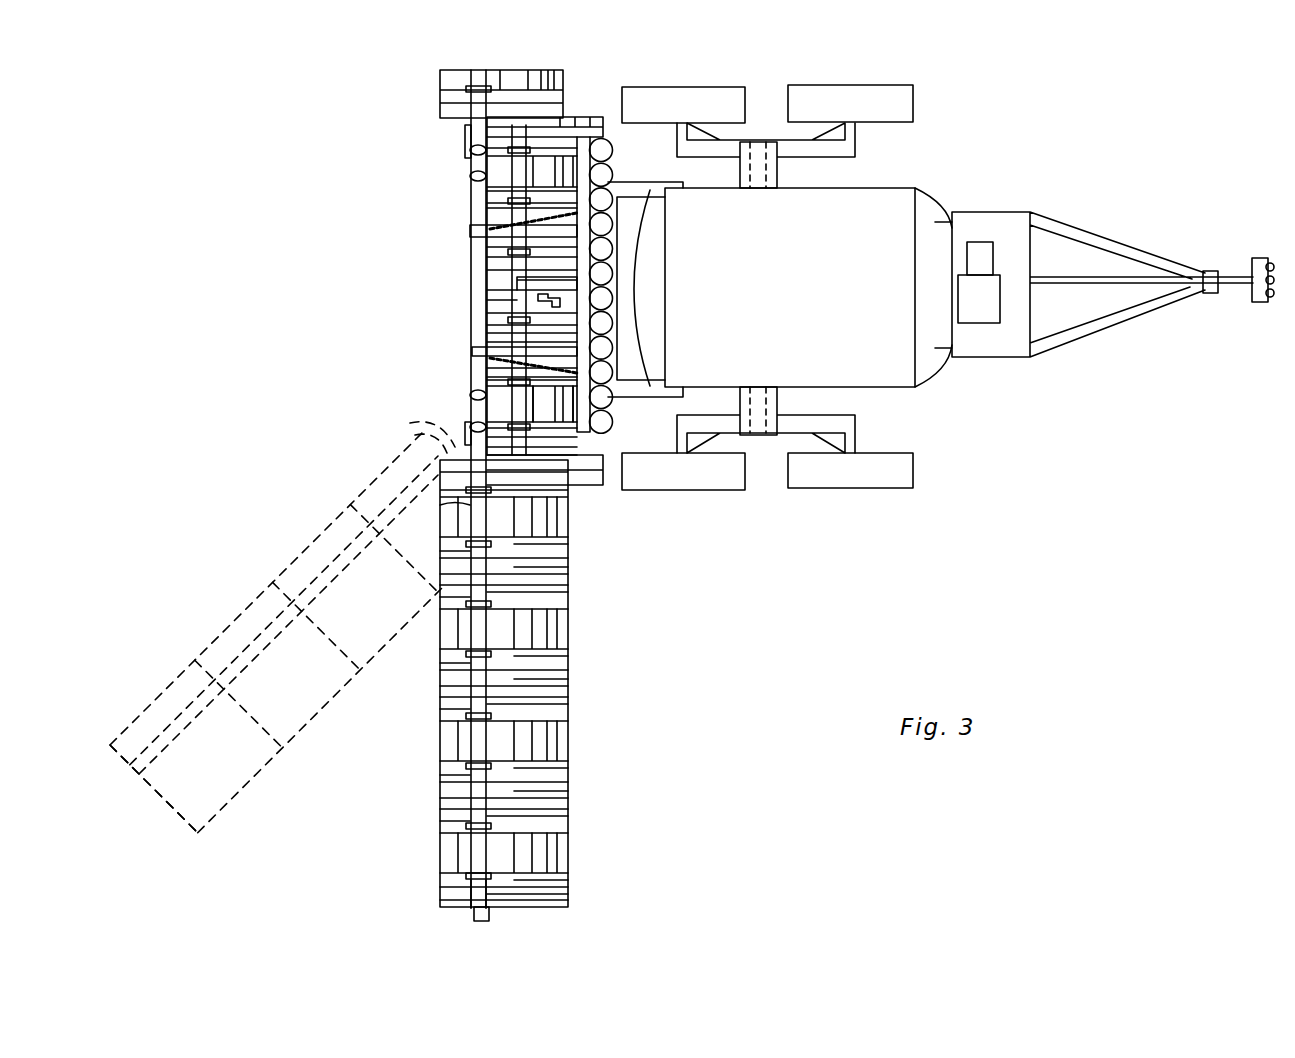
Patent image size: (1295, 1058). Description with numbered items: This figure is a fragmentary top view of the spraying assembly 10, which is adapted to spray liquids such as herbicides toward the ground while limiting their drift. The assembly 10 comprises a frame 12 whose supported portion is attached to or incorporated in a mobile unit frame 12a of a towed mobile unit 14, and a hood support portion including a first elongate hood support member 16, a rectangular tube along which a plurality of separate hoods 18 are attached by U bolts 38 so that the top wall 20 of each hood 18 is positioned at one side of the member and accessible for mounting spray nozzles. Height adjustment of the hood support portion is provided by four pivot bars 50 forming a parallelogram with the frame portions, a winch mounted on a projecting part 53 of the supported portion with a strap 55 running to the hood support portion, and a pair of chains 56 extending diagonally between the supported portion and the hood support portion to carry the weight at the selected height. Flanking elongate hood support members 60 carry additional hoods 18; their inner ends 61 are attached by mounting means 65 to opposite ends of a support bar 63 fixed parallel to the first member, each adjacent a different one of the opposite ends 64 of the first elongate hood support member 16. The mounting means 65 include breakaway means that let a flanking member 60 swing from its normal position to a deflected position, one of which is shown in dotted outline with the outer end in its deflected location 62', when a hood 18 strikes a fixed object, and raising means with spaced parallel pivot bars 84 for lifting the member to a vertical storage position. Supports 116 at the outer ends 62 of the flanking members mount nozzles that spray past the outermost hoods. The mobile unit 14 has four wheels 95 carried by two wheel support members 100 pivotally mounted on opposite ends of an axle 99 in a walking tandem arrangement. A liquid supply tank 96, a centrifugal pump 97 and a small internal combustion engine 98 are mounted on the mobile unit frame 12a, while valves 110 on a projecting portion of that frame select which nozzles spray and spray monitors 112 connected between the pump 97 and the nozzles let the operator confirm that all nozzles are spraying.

The assembly 10 is at (956, 458).
The frame 12 is at (460, 230).
The mobile unit frame 12a is at (943, 367).
The mobile unit 14 is at (1093, 235).
The first elongate hood support member 16 is at (523, 410).
The hoods 18 is at (430, 96).
The top wall 20 is at (505, 743).
The U bolts 38 is at (516, 192).
The pivot bars 50 is at (473, 241).
The projecting part 53 is at (522, 285).
The strap 55 is at (476, 282).
The chains 56 is at (563, 213).
The flanking elongate hood support members 60 is at (478, 72).
The inner ends 61 is at (470, 505).
The outer ends 62 is at (436, 893).
The outer end of conduit in folded position 62' is at (152, 789).
The support bar 63 is at (477, 378).
The opposite ends 64 is at (518, 130).
The mounting means 65 is at (460, 168).
The pivot bars 84 is at (466, 133).
The wheels 95 is at (792, 85).
The liquid supply tank 96 is at (835, 279).
The centrifugal pump 97 is at (988, 313).
The internal combustion engine 98 is at (982, 245).
The axle 99 is at (752, 423).
The wheel support members 100 is at (847, 148).
The valves 110 is at (1255, 260).
The spray monitors 112 is at (600, 214).
The supports 116 is at (490, 915).